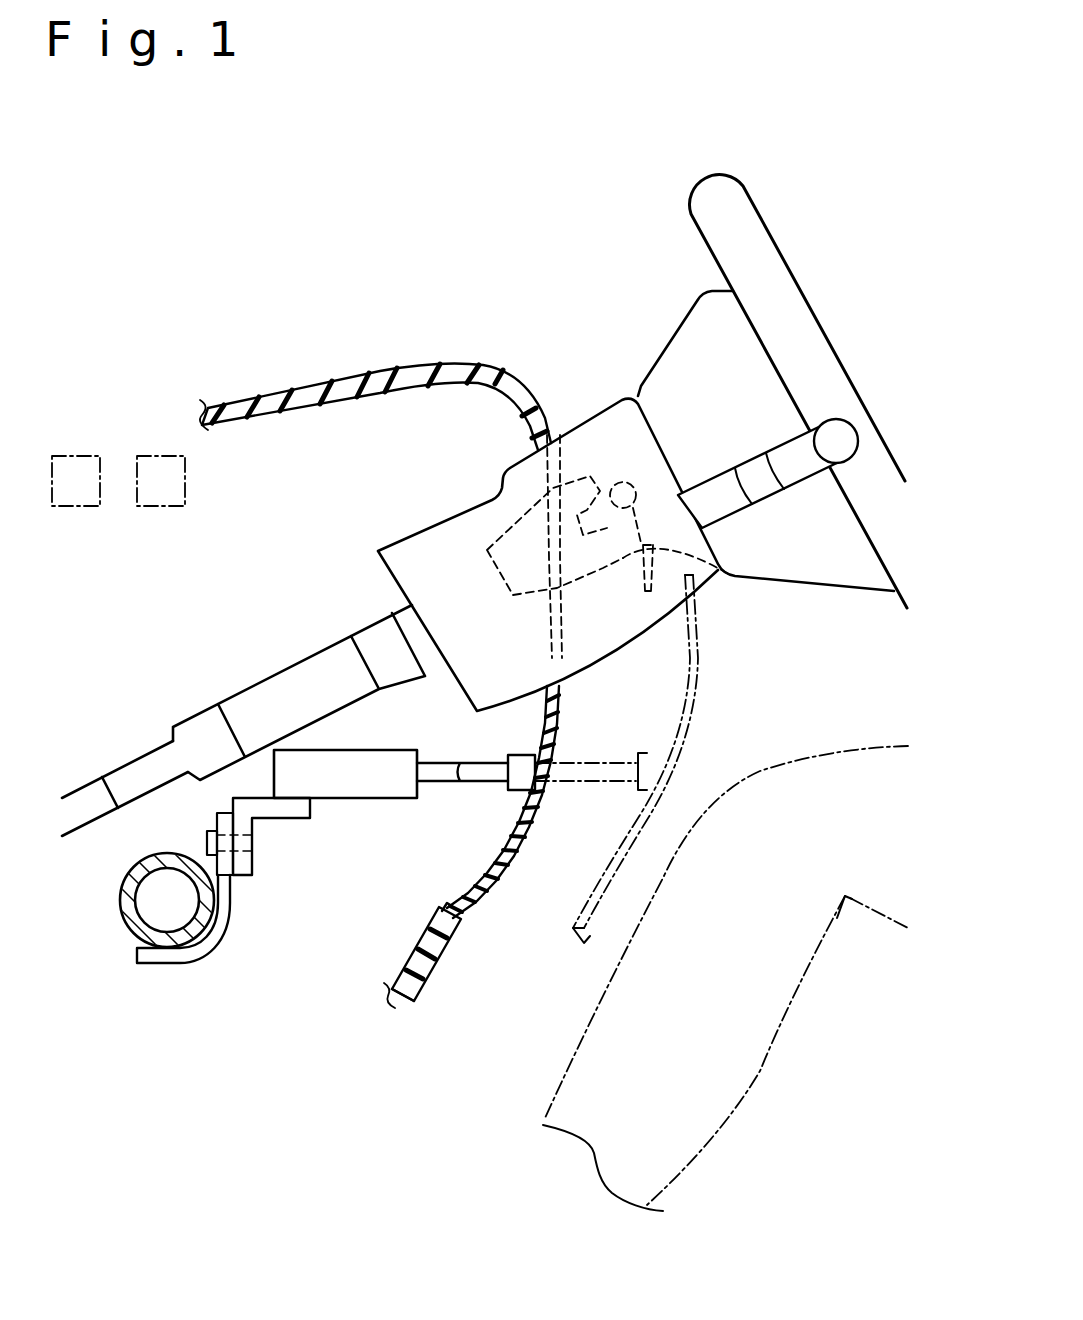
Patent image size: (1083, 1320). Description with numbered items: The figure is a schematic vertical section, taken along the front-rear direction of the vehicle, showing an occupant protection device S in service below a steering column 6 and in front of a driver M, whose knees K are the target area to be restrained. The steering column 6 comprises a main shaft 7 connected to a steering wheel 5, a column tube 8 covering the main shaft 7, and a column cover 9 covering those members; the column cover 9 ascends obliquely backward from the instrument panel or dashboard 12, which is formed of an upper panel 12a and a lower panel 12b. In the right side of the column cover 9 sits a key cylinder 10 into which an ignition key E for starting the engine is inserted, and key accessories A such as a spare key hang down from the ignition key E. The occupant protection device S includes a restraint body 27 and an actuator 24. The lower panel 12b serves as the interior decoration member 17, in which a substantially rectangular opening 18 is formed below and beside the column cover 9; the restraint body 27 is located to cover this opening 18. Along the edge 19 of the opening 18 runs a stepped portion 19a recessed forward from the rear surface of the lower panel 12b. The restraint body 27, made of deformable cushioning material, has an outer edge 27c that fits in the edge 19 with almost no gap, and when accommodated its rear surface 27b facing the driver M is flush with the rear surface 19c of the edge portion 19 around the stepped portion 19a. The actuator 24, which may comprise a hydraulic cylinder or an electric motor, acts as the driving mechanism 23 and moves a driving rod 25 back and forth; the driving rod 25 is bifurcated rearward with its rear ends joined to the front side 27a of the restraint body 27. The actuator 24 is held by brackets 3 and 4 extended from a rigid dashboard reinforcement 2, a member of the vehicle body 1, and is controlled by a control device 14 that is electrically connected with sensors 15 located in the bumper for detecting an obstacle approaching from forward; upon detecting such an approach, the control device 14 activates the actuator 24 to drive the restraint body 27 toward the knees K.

The vehicle body 1 is at (172, 922).
The dashboard reinforcement 2 is at (128, 912).
The bracket 3 is at (227, 925).
The bracket 4 is at (245, 873).
The steering wheel 5 is at (730, 202).
The steering column 6 is at (592, 361).
The main shaft 7 is at (85, 805).
The column tube 8 is at (243, 703).
The column cover 9 is at (623, 413).
The key cylinder 10 is at (583, 477).
The instrument panel (dashboard) 12 is at (375, 328).
The upper panel 12a is at (348, 388).
The lower panel 12b is at (392, 987).
The control device 14 is at (158, 455).
The sensors 15 is at (68, 455).
The interior decoration member 17 is at (368, 1035).
The opening 18 is at (475, 878).
The edge of the opening 19 is at (357, 995).
The stepped portion 19a is at (443, 917).
The rear surface of the edge portion 19c is at (433, 973).
The driving mechanism 23 is at (460, 687).
The actuator 24 is at (357, 770).
The driving rod 25 is at (435, 770).
The restraint body 27 is at (499, 757).
The front side of the restraint body 27a is at (508, 827).
The rear surface of the restraint body 27b is at (555, 740).
The outer edge of the restraint body 27c is at (460, 930).
The ignition key E is at (643, 477).
The key accessories A is at (720, 570).
The knees K is at (757, 828).
The occupant protection device S is at (272, 1020).
The driver M is at (873, 988).